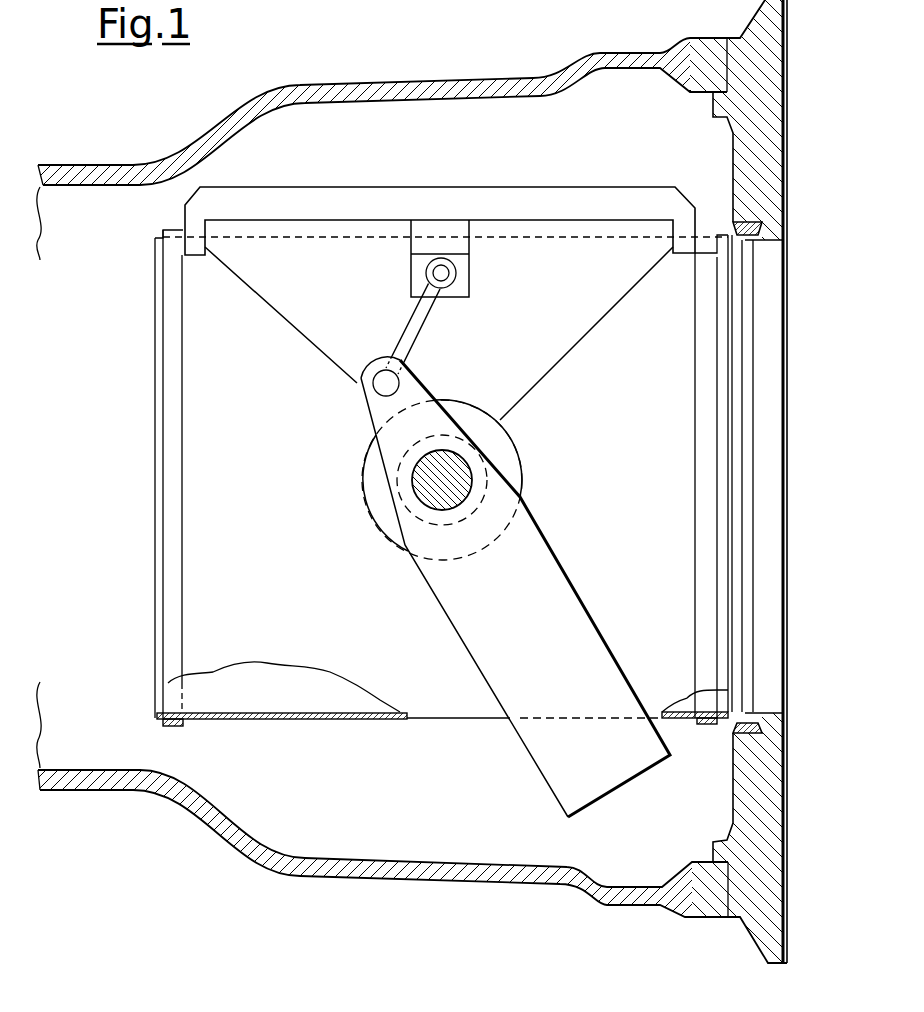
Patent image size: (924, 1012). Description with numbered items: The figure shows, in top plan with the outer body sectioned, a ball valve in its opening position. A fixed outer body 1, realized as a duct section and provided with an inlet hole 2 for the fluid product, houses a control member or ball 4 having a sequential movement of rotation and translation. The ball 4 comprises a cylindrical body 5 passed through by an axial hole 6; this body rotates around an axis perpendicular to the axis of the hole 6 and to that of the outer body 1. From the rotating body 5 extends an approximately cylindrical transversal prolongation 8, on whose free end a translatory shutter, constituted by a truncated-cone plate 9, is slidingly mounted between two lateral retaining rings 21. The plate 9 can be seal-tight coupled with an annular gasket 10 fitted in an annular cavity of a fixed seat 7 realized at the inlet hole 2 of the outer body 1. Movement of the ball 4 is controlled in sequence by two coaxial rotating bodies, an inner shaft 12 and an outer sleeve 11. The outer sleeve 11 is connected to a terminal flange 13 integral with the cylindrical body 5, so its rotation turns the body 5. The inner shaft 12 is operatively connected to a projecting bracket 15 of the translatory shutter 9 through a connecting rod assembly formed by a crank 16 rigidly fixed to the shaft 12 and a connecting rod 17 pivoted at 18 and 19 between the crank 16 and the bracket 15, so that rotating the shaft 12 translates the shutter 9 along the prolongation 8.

The fixed outer body 1 is at (325, 84).
The inlet hole 2 is at (768, 243).
The ball 4 is at (350, 720).
The cylindrical body 5 is at (265, 722).
The axial hole 6 is at (215, 714).
The fixed seat 7 is at (745, 248).
The transversal prolongation 8 is at (560, 333).
The truncated-cone plate 9 is at (536, 200).
The annular gasket 10 is at (758, 222).
The outer sleeve 11 is at (487, 490).
The inner shaft 12 is at (432, 493).
The terminal flange 13 is at (507, 445).
The projecting bracket 15 is at (418, 243).
The crank 16 is at (572, 627).
The connecting rod 17 is at (410, 333).
The pivot 18 is at (383, 385).
The pivot 19 is at (446, 274).
The lateral retaining rings 21 is at (176, 308).